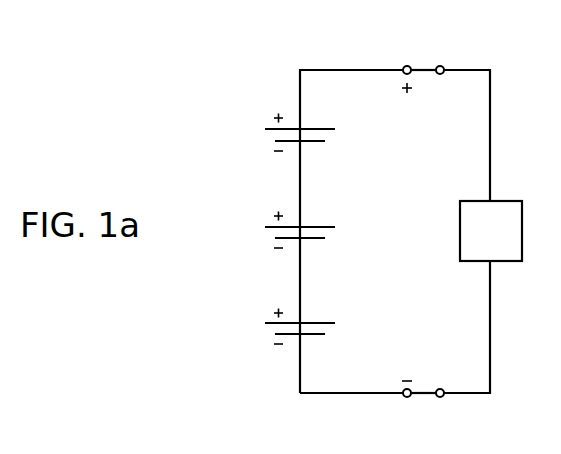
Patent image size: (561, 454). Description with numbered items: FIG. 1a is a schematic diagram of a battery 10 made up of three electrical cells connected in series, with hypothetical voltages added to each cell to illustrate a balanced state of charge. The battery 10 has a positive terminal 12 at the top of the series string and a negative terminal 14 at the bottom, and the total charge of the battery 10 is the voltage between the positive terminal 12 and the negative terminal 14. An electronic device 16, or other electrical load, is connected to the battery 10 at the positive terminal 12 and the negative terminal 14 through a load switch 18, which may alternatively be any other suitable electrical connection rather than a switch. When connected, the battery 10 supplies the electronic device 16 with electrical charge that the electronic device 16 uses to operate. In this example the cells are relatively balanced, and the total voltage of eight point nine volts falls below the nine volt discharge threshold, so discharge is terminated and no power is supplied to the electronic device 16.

The battery 10 is at (190, 69).
The positive terminal 12 is at (403, 67).
The negative terminal 14 is at (404, 397).
The electronic device 16 is at (480, 246).
The load switch 18 is at (422, 70).